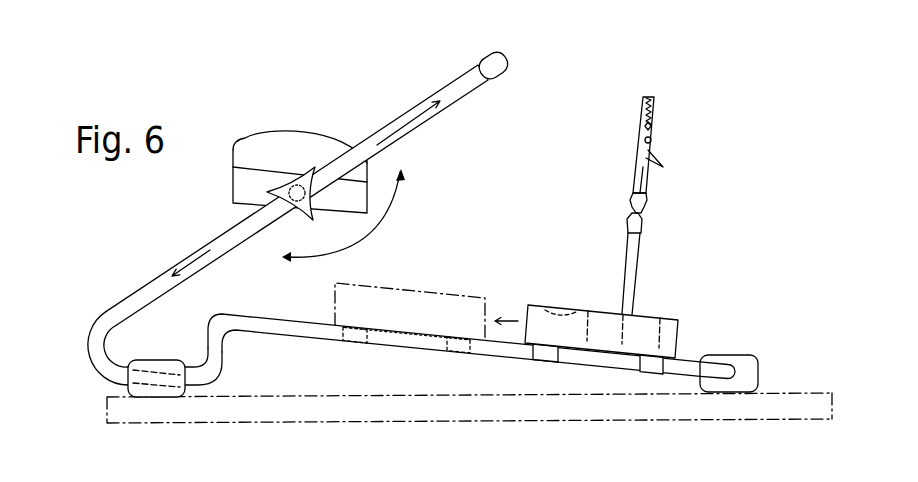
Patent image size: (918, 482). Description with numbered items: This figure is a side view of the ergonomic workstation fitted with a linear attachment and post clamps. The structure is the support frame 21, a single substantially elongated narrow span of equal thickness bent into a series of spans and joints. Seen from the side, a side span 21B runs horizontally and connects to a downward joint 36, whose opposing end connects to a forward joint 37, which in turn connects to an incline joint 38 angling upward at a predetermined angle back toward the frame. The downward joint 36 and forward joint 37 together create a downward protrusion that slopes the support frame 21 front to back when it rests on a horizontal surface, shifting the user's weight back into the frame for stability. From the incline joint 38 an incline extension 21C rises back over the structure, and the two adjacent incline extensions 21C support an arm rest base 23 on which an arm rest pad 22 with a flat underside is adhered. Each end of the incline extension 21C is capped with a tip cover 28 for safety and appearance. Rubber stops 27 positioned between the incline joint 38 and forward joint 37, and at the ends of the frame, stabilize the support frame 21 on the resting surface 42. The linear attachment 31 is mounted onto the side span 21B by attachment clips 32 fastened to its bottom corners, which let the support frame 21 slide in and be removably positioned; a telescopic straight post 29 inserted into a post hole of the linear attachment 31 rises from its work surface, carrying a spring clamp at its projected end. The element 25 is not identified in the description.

The support frame 21 is at (311, 346).
The side span 21B is at (436, 344).
The incline extension 21C is at (462, 95).
The arm rest pad 22 is at (276, 137).
The arm rest base 23 is at (247, 182).
The propeller 25 is at (268, 198).
The rubber stop 27 is at (128, 386).
The tip cover 28 is at (492, 60).
The straight post 29 is at (638, 245).
The linear attachment 31 is at (670, 328).
The attachment clip 32 is at (633, 368).
The downward joint 36 is at (229, 331).
The forward joint 37 is at (221, 379).
The incline joint 38 is at (87, 341).
The resting surface 42 is at (183, 418).